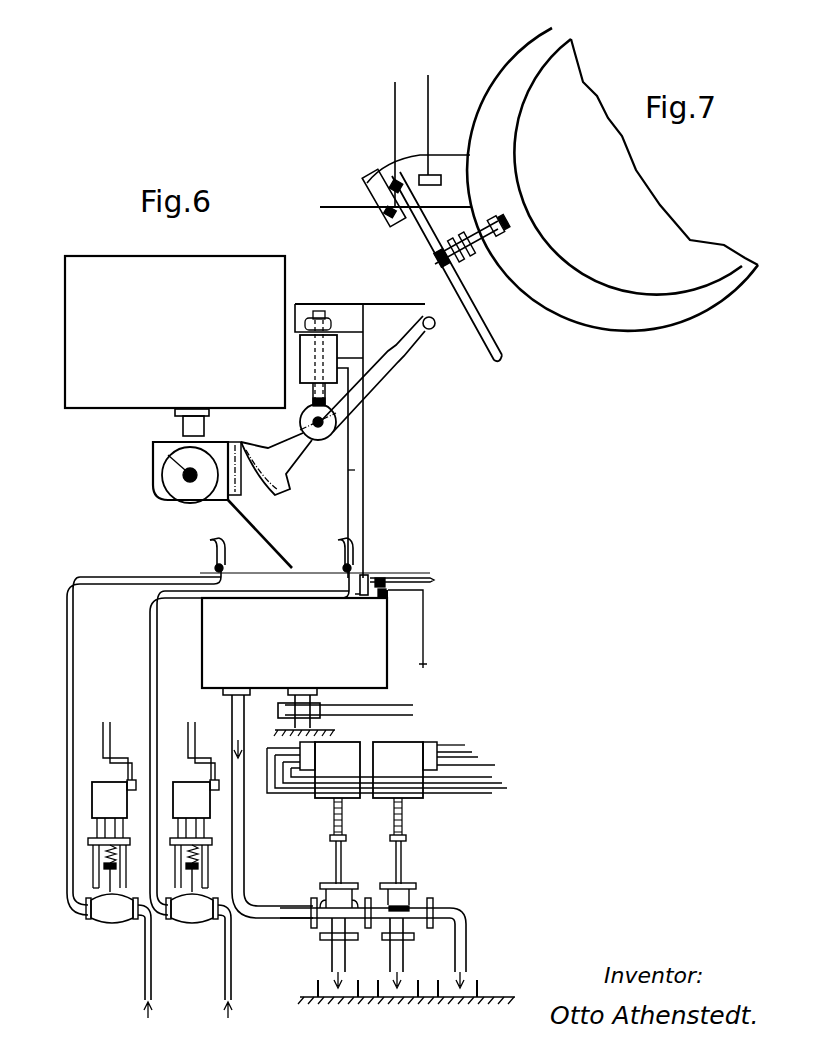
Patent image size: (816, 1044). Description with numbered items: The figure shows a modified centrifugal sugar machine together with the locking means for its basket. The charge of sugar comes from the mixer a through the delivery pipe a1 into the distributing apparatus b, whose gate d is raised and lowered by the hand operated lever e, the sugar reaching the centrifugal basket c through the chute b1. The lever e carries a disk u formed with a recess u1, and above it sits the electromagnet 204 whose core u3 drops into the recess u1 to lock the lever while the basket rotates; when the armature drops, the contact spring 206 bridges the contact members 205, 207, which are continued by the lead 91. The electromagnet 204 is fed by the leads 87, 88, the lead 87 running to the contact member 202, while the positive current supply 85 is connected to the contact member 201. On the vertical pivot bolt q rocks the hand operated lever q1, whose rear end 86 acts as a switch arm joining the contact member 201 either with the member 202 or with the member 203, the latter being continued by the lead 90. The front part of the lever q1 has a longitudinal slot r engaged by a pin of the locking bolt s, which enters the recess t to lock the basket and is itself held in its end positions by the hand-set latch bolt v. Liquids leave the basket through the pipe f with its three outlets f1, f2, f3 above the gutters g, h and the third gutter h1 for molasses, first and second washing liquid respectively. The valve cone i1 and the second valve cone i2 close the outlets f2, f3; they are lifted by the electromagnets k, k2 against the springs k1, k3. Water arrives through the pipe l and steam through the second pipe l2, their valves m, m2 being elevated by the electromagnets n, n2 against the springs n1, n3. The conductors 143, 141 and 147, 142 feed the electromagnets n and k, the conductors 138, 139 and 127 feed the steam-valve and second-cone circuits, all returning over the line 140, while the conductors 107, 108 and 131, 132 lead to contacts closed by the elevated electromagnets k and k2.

In FIG. 6, the mixer a is at (123, 256).
In FIG. 6, the delivery pipe a1 is at (182, 426).
In FIG. 6, the distributing apparatus b is at (153, 470).
In FIG. 6, the chute b1 is at (262, 549).
In FIG. 6, the centrifugal basket c is at (387, 656).
In FIG. 7, the centrifugal basket c is at (510, 66).
In FIG. 6, the gate d is at (243, 488).
In FIG. 6, the hand operated lever e is at (430, 330).
In FIG. 6, the disk u is at (322, 440).
In FIG. 6, the recess u1 is at (313, 402).
In FIG. 6, the core u3 is at (326, 395).
In FIG. 6, the electromagnet 204 is at (300, 353).
In FIG. 6, the contact member 205 is at (330, 320).
In FIG. 6, the contact spring 206 is at (319, 312).
In FIG. 6, the contact member 207 is at (303, 318).
In FIG. 6, the lead 91 is at (388, 304).
In FIG. 6, the lead 90 is at (365, 487).
In FIG. 7, the lead 90 is at (428, 102).
In FIG. 6, the lead 88 is at (364, 455).
In FIG. 6, the lead 87 is at (348, 474).
In FIG. 7, the lead 87 is at (395, 102).
In FIG. 6, the rear end 86 is at (368, 580).
In FIG. 7, the rear end 86 is at (394, 192).
In FIG. 6, the contact member 201 is at (386, 598).
In FIG. 7, the contact member 201 is at (390, 218).
In FIG. 6, the contact member 202 is at (358, 599).
In FIG. 7, the contact member 202 is at (392, 176).
In FIG. 7, the contact member 203 is at (432, 174).
In FIG. 6, the positive current supply 85 is at (424, 613).
In FIG. 7, the positive current supply 85 is at (392, 199).
In FIG. 7, the vertical pivot bolt q is at (428, 258).
In FIG. 6, the hand operated lever q1 is at (415, 576).
In FIG. 7, the hand operated lever q1 is at (474, 322).
In FIG. 7, the longitudinal slot r is at (438, 262).
In FIG. 7, the locking bolt s is at (500, 228).
In FIG. 7, the recess t is at (508, 238).
In FIG. 7, the latch bolt v is at (470, 256).
In FIG. 6, the pipe l is at (150, 667).
In FIG. 6, the second pipe l2 is at (67, 686).
In FIG. 6, the pipe f is at (248, 818).
In FIG. 6, the outlet f1 is at (467, 940).
In FIG. 6, the outlet f2 is at (389, 948).
In FIG. 6, the outlet f3 is at (331, 948).
In FIG. 6, the gutter g is at (456, 1000).
In FIG. 6, the gutter h is at (398, 1000).
In FIG. 6, the third gutter h1 is at (340, 1000).
In FIG. 6, the valve cone i1 is at (412, 900).
In FIG. 6, the second valve cone i2 is at (332, 900).
In FIG. 6, the electromagnet k is at (405, 770).
In FIG. 6, the spring k1 is at (404, 822).
In FIG. 6, the electromagnet k2 is at (386, 770).
In FIG. 6, the spring k3 is at (334, 822).
In FIG. 6, the valve m is at (192, 921).
In FIG. 6, the valve m2 is at (112, 921).
In FIG. 6, the electromagnet n is at (194, 807).
In FIG. 6, the spring n1 is at (204, 853).
In FIG. 6, the electromagnet n2 is at (112, 807).
In FIG. 6, the spring n3 is at (104, 857).
In FIG. 6, the conductor 107 is at (472, 757).
In FIG. 6, the conductor 108 is at (495, 765).
In FIG. 6, the conductor 127 is at (470, 790).
In FIG. 6, the conductor 131 is at (492, 778).
In FIG. 6, the conductor 132 is at (500, 784).
In FIG. 6, the conductor 138 is at (110, 739).
In FIG. 6, the conductor 139 is at (103, 739).
In FIG. 6, the conductor 140 is at (442, 794).
In FIG. 6, the conductor 141 is at (195, 739).
In FIG. 6, the conductor 142 is at (446, 745).
In FIG. 6, the conductor 143 is at (188, 743).
In FIG. 6, the conductor 147 is at (460, 752).